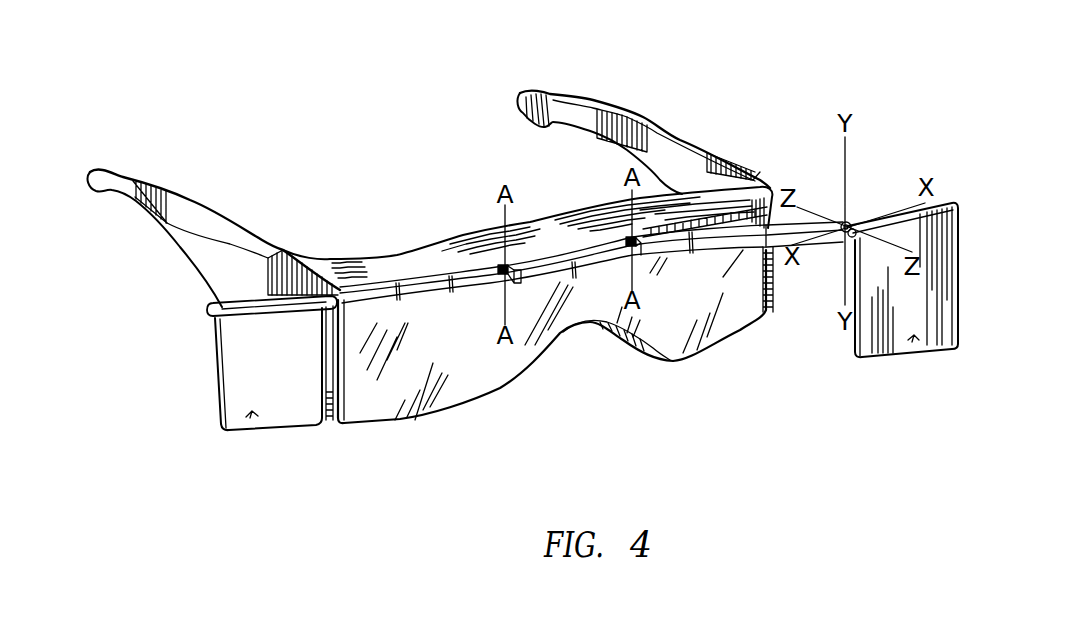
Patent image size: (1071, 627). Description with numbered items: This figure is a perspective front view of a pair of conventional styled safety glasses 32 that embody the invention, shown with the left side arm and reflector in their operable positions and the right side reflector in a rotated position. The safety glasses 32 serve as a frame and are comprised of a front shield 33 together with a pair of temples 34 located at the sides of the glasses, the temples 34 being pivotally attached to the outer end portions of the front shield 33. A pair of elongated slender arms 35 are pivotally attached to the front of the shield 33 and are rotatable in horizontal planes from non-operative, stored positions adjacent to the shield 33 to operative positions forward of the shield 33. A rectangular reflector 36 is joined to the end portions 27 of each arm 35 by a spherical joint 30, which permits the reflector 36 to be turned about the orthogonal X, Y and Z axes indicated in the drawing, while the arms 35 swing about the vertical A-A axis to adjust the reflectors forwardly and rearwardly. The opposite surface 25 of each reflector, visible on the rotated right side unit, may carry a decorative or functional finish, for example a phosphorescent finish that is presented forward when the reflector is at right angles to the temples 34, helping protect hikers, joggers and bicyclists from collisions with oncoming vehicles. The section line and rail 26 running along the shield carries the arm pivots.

The opposite surface 25 is at (251, 414).
The rail / support bar 26 is at (503, 266).
The end portions 27 is at (342, 290).
The spherical joint 30 is at (328, 308).
The safety glasses 32 is at (683, 358).
The front shield 33 is at (413, 421).
The temples 34 is at (183, 193).
The elongated slender arms 35 is at (423, 303).
The rectangular reflector 36 is at (318, 428).